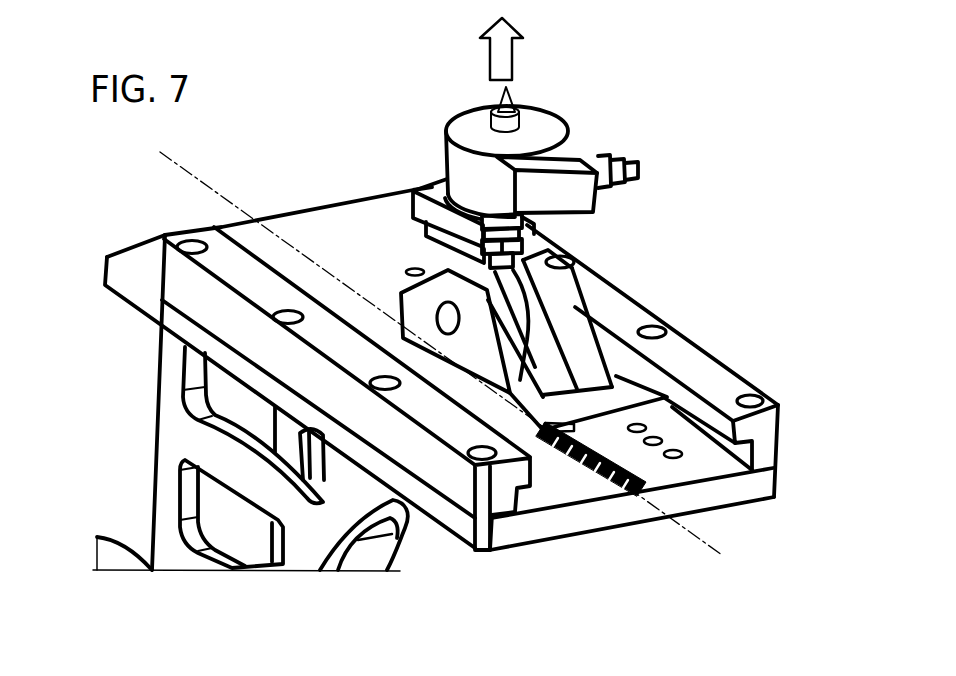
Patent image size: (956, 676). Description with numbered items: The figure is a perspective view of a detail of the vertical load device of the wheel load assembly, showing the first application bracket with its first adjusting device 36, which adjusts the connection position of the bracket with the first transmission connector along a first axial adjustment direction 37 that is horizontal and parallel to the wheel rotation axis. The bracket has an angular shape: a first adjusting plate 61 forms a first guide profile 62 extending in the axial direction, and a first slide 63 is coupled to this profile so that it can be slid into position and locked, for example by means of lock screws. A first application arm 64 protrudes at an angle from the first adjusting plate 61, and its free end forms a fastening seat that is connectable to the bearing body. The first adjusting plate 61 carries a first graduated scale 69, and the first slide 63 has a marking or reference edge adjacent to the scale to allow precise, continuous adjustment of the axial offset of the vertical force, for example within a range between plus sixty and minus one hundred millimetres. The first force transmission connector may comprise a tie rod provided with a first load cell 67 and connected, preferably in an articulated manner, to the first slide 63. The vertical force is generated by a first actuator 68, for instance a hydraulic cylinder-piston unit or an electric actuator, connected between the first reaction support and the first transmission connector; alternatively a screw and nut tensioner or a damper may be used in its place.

The first adjusting device 36 is at (642, 307).
The first axial adjustment direction 37 is at (232, 200).
The first adjusting plate 61 is at (332, 202).
The first guide profile 62 is at (730, 380).
The first slide 63 is at (560, 303).
The first application arm 64 is at (167, 457).
The first load cell 67 is at (538, 130).
The first actuator 68 is at (510, 60).
The first graduated scale 69 is at (600, 450).